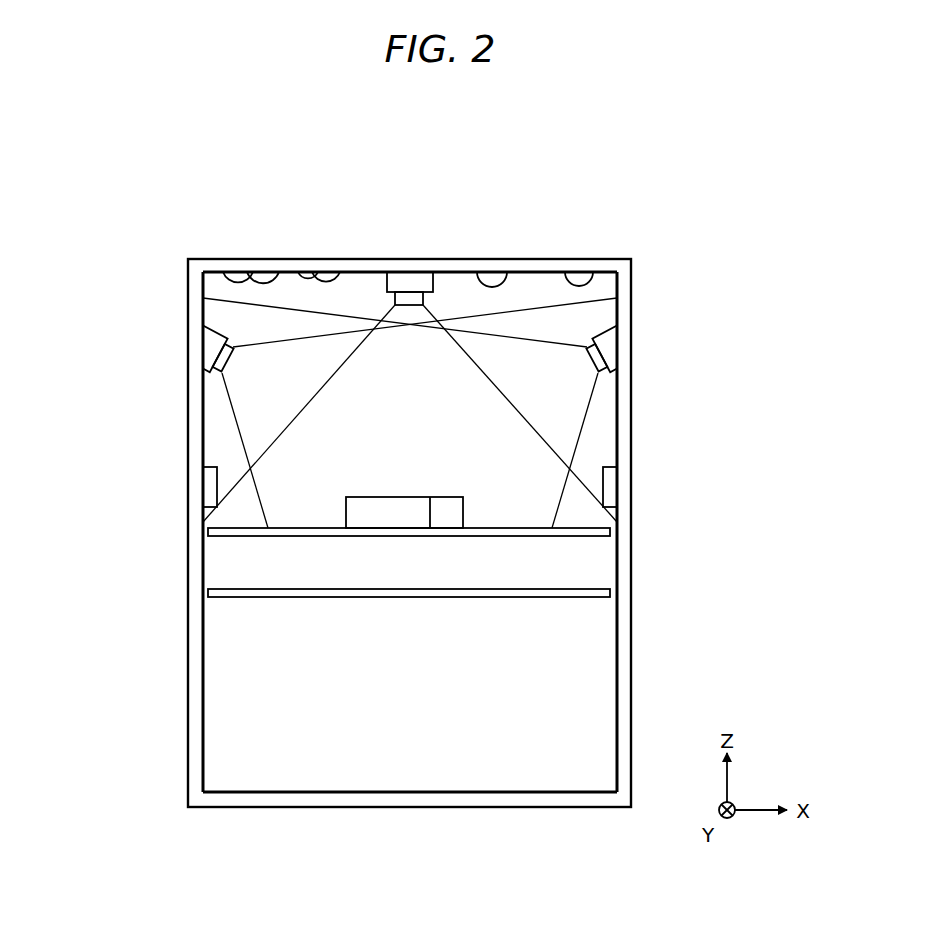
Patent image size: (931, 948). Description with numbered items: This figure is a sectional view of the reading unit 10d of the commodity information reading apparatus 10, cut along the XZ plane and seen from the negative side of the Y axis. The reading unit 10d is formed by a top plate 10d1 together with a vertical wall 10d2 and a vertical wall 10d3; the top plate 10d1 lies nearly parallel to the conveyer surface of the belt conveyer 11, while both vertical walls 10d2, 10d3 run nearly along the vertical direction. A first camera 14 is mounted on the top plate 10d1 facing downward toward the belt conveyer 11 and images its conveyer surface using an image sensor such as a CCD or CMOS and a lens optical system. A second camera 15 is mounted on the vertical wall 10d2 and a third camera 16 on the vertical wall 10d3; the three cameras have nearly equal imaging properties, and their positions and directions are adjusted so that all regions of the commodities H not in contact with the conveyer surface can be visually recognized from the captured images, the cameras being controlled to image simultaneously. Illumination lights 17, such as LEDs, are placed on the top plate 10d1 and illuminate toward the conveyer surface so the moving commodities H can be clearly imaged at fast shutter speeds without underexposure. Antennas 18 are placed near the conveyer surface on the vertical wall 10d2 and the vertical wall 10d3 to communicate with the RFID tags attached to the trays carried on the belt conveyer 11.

The commodity information reading apparatus 10 is at (411, 452).
The reading unit 10d is at (545, 256).
The top plate 10d1 is at (352, 258).
The vertical wall 10d2 is at (201, 377).
The vertical wall 10d3 is at (632, 377).
The belt conveyer 11 is at (568, 588).
The first camera 14 is at (447, 272).
The second camera 15 is at (211, 318).
The third camera 16 is at (609, 318).
The illumination lights 17 is at (278, 279).
The antennas 18 is at (203, 460).
The commodities H is at (368, 497).